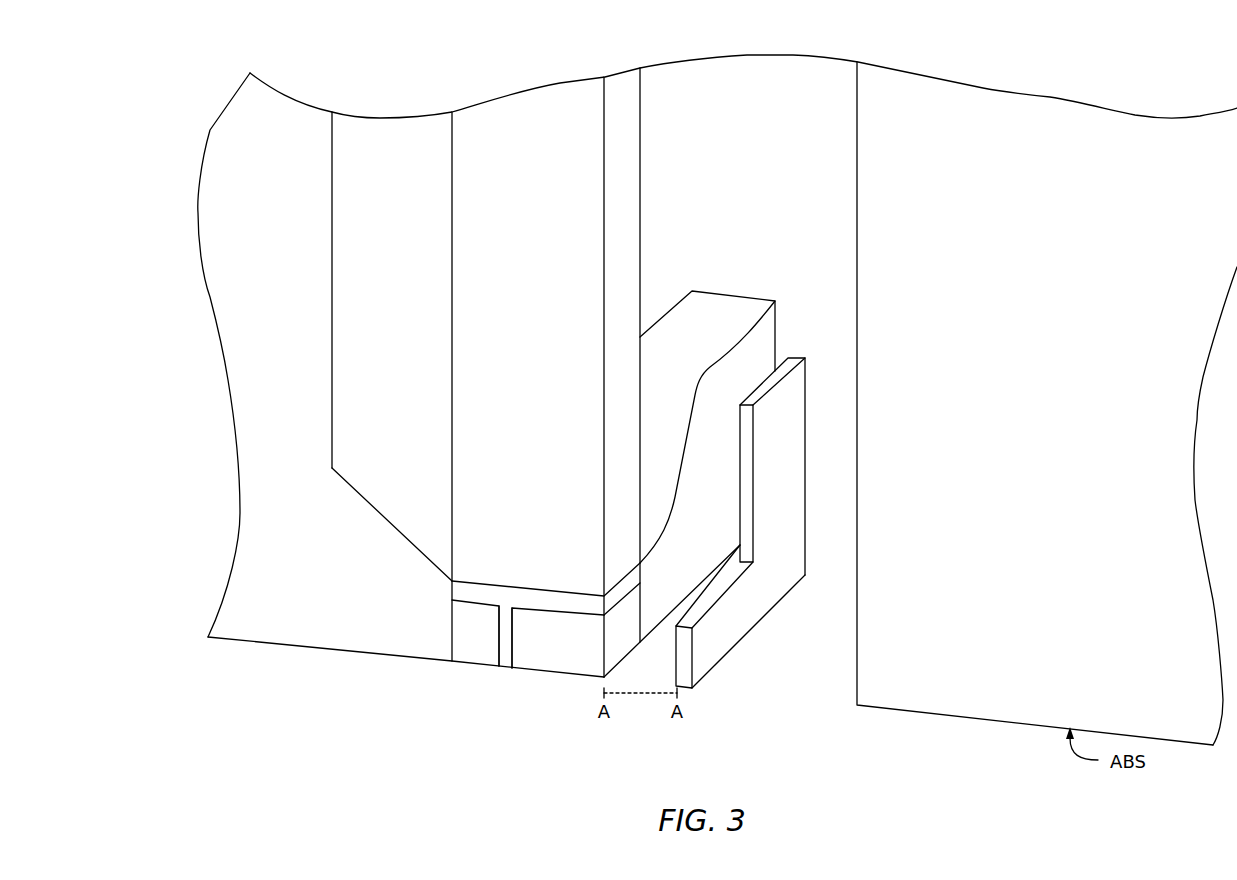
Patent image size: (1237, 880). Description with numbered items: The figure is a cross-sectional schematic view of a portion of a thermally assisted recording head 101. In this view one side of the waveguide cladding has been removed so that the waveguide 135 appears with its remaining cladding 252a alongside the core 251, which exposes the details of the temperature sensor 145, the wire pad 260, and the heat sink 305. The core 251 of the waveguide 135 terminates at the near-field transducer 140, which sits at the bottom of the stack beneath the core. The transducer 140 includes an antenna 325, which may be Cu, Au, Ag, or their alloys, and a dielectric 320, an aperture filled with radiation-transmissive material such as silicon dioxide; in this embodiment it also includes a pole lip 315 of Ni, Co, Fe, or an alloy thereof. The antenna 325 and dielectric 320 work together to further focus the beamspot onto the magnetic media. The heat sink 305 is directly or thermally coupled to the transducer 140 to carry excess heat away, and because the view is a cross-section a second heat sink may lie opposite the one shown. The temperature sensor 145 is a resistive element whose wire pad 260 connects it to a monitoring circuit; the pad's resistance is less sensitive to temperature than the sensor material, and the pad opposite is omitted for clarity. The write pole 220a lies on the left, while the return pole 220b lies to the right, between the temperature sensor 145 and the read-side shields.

The head 101 is at (200, 128).
The waveguide 135 is at (857, 57).
The near-field transducer 140 is at (602, 592).
The temperature sensor 145 is at (717, 665).
The write pole 220a is at (347, 600).
The return pole 220b is at (987, 600).
The core 251 is at (509, 247).
The cladding 252a is at (364, 247).
The wire pad 260 is at (795, 358).
The heat sink 305 is at (730, 294).
The pole lip 315 is at (466, 666).
The dielectric 320 is at (506, 669).
The antenna 325 is at (587, 678).